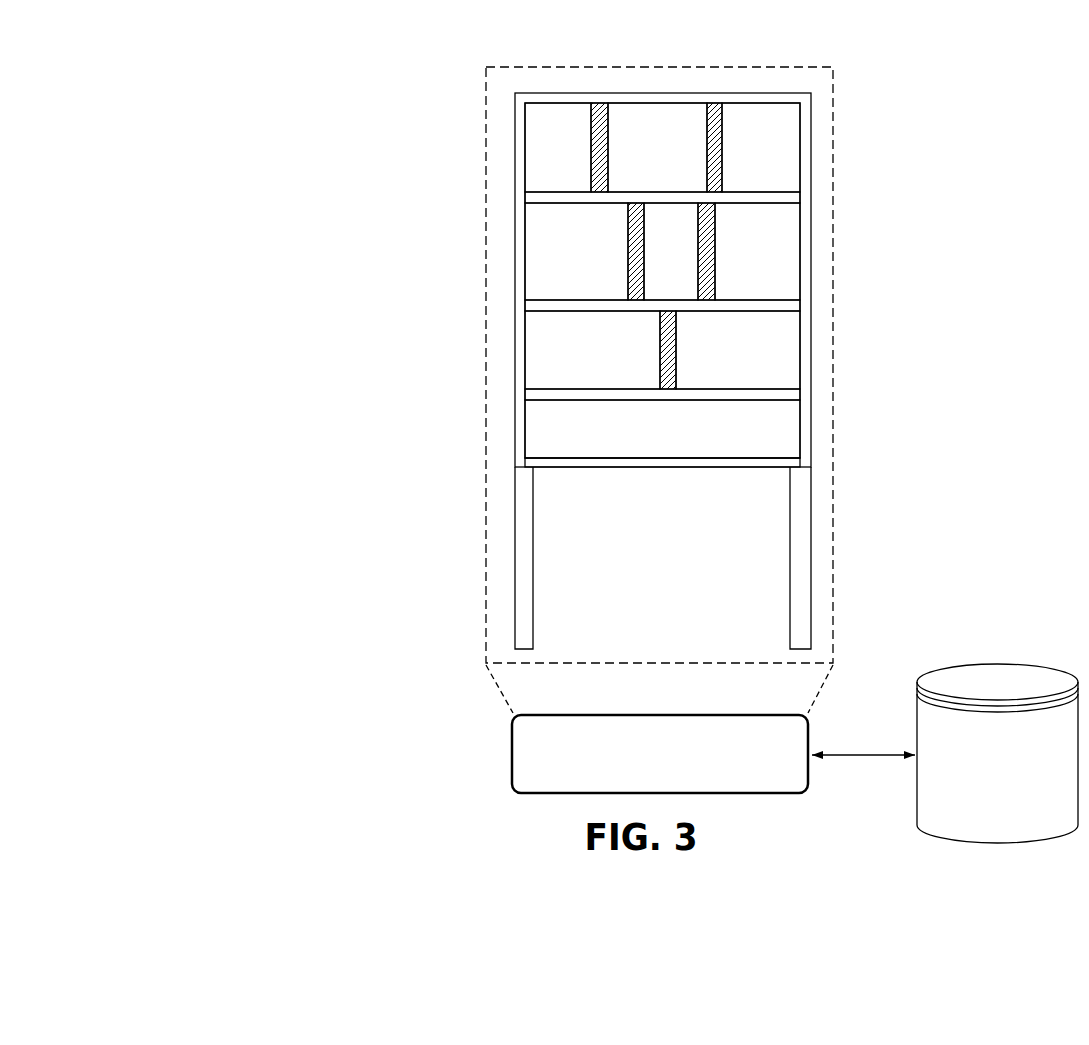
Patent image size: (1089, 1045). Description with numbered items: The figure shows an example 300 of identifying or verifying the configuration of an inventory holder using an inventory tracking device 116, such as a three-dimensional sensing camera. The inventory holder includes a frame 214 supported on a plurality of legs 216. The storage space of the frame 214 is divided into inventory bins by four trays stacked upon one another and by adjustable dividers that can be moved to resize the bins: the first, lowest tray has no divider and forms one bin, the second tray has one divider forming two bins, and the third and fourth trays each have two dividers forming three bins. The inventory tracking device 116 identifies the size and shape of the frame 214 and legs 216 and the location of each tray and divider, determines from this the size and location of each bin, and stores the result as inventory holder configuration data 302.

The inventory holder configuration environment 300 is at (190, 73).
The frame 214 is at (498, 360).
The legs 216 is at (498, 530).
The inventory tracking device 116 is at (660, 754).
The inventory holder configuration data 302 is at (997, 753).